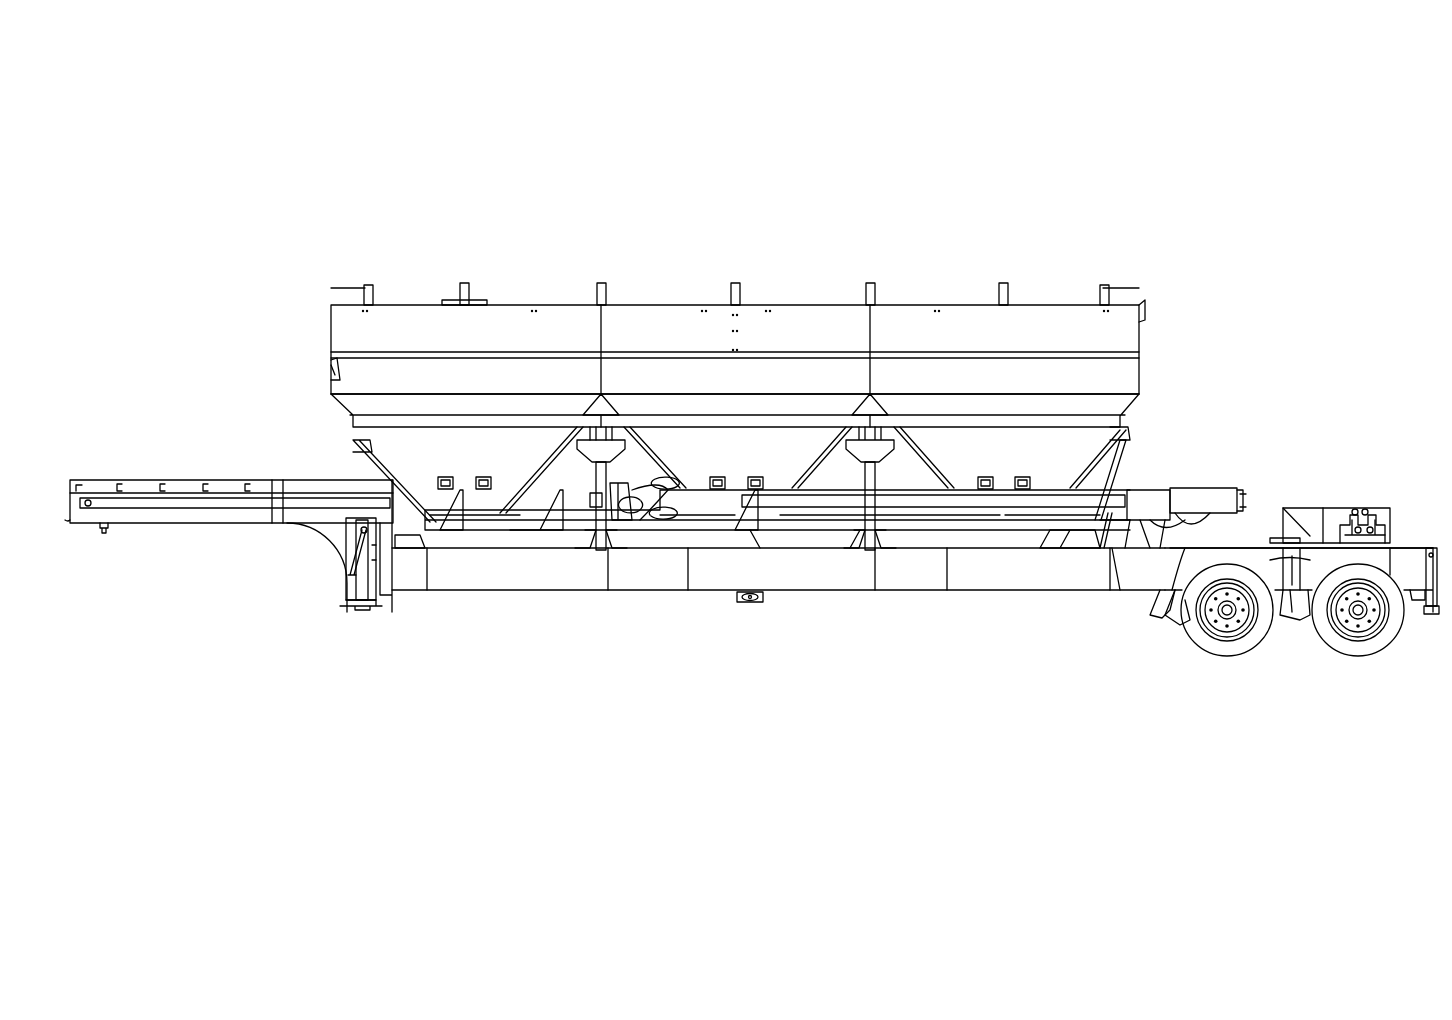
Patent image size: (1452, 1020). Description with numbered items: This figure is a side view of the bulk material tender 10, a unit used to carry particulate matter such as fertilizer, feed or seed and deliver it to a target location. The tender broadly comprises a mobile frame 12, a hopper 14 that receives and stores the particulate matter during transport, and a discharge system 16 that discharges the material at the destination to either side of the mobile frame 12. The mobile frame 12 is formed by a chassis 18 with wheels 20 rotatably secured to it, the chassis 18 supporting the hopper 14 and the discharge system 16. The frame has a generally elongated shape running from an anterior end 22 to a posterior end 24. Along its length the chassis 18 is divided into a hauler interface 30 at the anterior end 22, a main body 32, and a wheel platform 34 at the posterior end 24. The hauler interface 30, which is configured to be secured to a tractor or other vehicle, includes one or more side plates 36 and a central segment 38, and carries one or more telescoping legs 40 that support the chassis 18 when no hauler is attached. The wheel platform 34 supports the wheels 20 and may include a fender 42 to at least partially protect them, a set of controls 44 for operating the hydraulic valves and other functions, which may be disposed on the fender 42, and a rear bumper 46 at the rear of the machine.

The bulk material tender 10 is at (261, 165).
The mobile frame 12 is at (591, 622).
The hopper 14 is at (649, 271).
The discharge system 16 is at (1186, 473).
The chassis 18 is at (1001, 598).
The wheels 20 is at (1345, 648).
The anterior end 22 is at (199, 352).
The posterior end 24 is at (1298, 294).
The hauler interface 30 is at (144, 464).
The main body 32 is at (778, 609).
The wheel platform 34 is at (1334, 428).
The side plates 36 is at (212, 505).
The central segment 38 is at (184, 487).
The telescoping legs 40 is at (354, 591).
The fender 42 is at (1259, 540).
The set of controls 44 is at (1386, 512).
The rear bumper 46 is at (1432, 618).